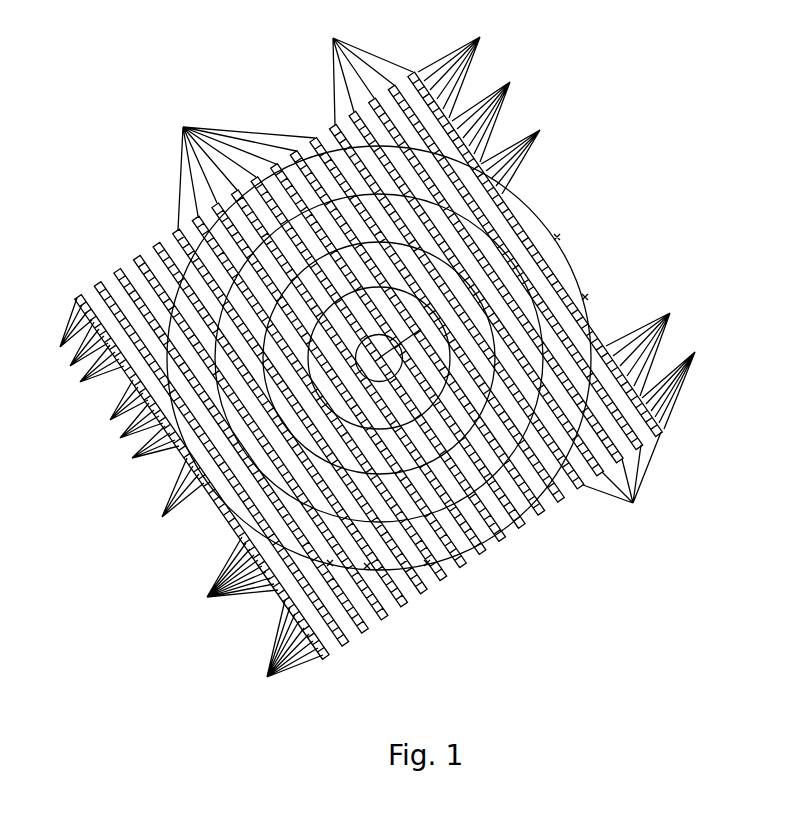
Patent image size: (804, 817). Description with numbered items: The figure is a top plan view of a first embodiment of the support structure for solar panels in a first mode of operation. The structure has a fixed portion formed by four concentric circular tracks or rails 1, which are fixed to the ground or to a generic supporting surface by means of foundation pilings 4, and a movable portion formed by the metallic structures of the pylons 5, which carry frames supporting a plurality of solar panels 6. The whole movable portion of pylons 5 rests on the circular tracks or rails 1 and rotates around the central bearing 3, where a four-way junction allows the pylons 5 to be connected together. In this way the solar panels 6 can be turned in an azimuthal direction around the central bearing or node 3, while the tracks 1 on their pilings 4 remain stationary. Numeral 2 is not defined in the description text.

The concentric tracks or rails 1 is at (527, 505).
The outermost strip 2 is at (82, 292).
The central bearing 3 is at (503, 523).
The pilings 4 is at (367, 566).
The pylons 5 is at (641, 510).
The solar panels 6 is at (267, 677).